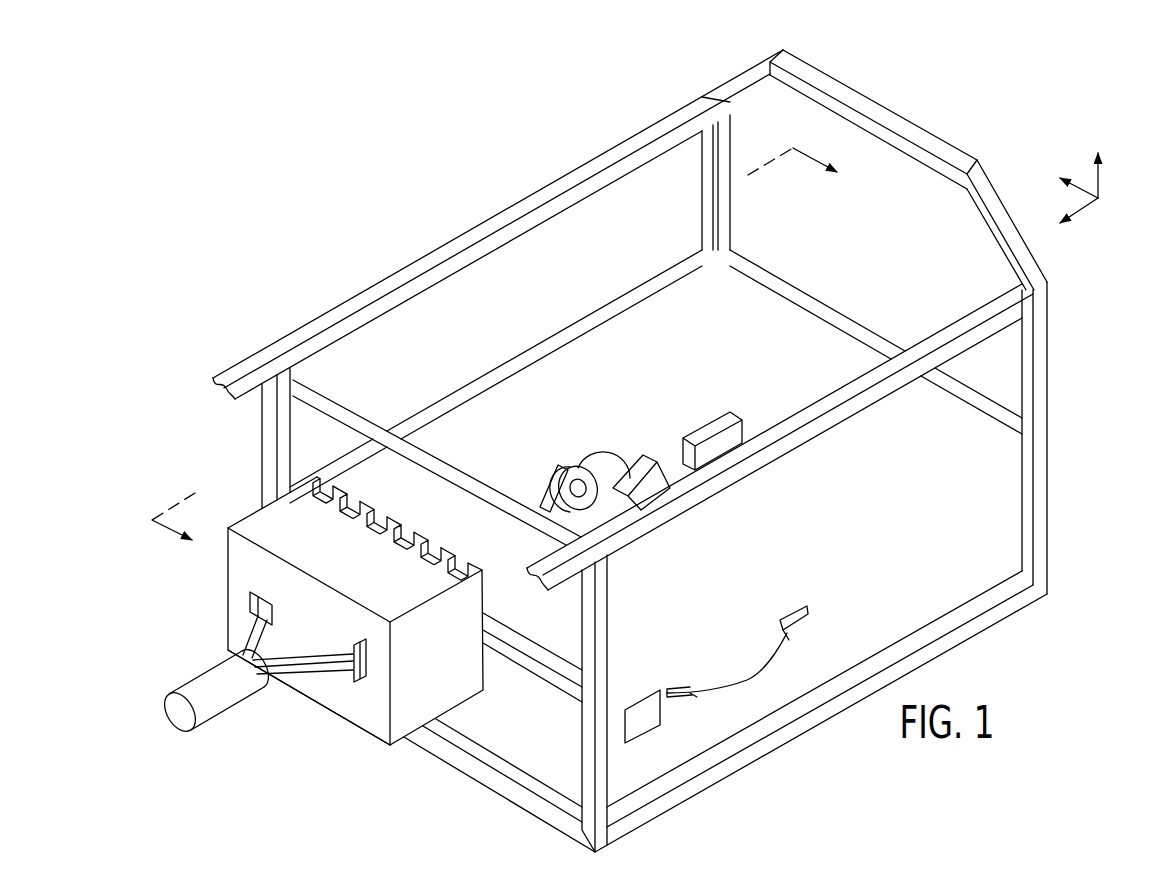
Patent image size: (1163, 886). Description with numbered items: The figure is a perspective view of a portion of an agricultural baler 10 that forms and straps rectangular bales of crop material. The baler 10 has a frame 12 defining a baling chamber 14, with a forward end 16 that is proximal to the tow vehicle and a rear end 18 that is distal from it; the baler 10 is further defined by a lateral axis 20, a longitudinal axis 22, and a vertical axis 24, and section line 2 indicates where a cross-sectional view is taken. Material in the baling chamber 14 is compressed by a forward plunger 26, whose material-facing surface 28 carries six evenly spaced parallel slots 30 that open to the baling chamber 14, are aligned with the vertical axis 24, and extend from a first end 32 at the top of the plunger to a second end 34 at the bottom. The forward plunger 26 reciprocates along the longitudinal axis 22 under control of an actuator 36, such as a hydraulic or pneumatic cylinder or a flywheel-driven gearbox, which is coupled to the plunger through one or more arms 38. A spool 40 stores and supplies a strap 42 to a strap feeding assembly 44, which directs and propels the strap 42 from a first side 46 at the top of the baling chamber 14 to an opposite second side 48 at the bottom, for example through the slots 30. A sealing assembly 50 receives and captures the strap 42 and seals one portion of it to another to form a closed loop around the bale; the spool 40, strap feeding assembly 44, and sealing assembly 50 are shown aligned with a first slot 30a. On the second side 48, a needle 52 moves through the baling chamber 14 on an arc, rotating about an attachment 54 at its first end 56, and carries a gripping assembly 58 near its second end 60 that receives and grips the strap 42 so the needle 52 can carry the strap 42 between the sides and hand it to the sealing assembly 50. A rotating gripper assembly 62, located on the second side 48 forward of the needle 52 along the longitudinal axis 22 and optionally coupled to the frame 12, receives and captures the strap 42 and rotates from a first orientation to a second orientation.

The agricultural baler 10 is at (952, 108).
The frame 12 is at (1042, 514).
The baling chamber 14 is at (793, 512).
The forward end 16 is at (308, 417).
The rear end 18 is at (873, 143).
The lateral axis 20 is at (1088, 180).
The longitudinal axis 22 is at (1085, 212).
The vertical axis 24 is at (1102, 182).
The forward plunger 26 is at (450, 700).
The material-facing surface 28 is at (378, 513).
The slots 30 is at (408, 530).
The first slot 30a is at (462, 560).
The first end 32 is at (262, 523).
The second end 34 is at (345, 708).
The actuator 36 is at (212, 676).
The arms 38 is at (320, 660).
The spool 40 is at (580, 467).
The strap 42 is at (608, 463).
The strap feeding assembly 44 is at (648, 462).
The first side 46 is at (777, 410).
The second side 48 is at (896, 552).
The sealing assembly 50 is at (710, 430).
The needle 52 is at (747, 680).
The attachment 54 is at (807, 606).
The first end 56 is at (788, 638).
The gripping assembly 58 is at (678, 690).
The second end 60 is at (697, 697).
The rotating gripper assembly 62 is at (640, 725).
The section line 2- 2 is at (503, 357).